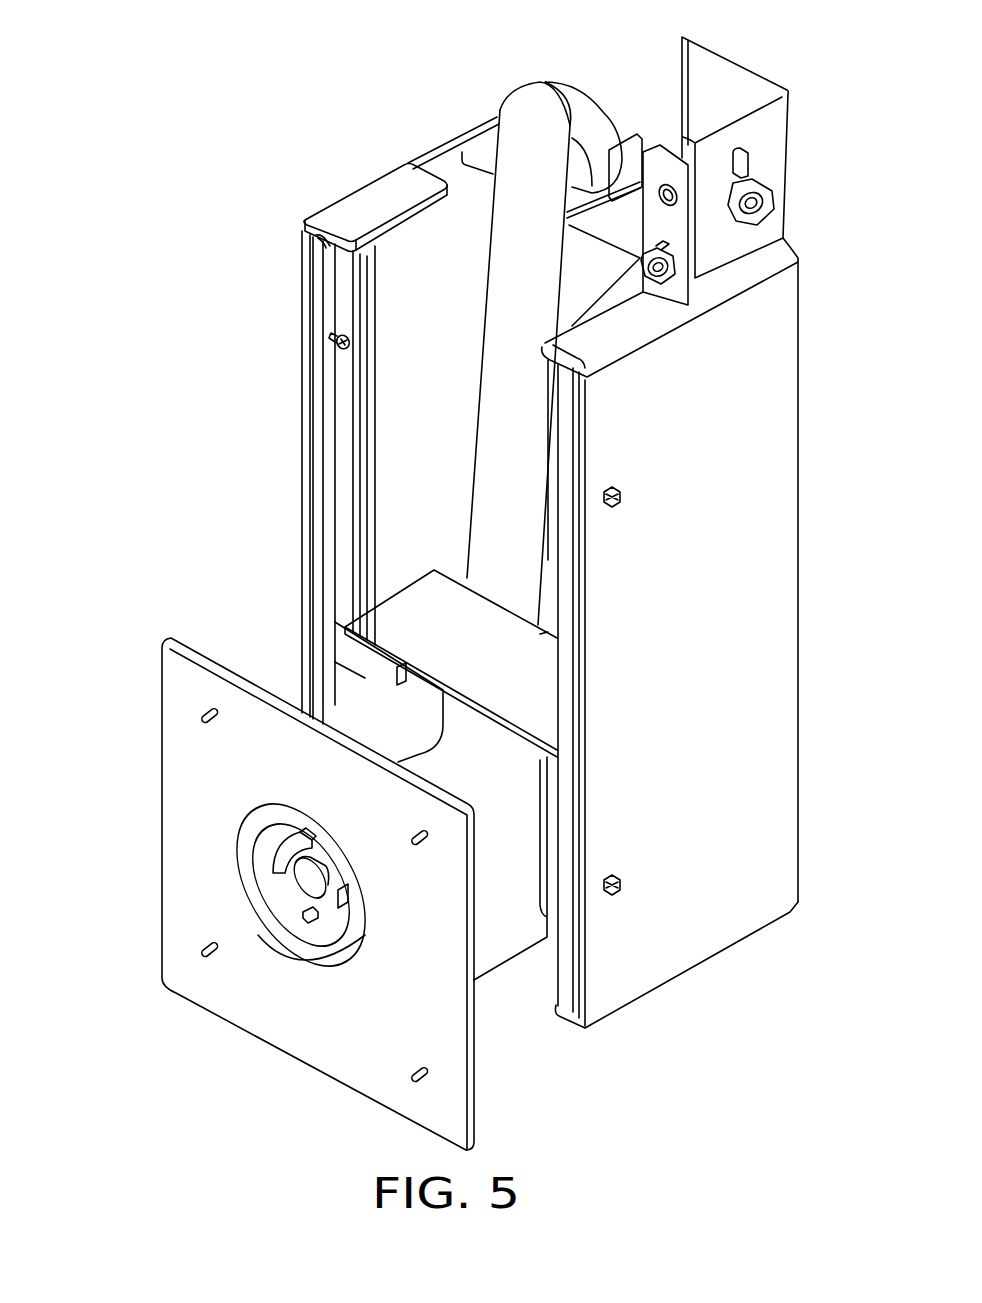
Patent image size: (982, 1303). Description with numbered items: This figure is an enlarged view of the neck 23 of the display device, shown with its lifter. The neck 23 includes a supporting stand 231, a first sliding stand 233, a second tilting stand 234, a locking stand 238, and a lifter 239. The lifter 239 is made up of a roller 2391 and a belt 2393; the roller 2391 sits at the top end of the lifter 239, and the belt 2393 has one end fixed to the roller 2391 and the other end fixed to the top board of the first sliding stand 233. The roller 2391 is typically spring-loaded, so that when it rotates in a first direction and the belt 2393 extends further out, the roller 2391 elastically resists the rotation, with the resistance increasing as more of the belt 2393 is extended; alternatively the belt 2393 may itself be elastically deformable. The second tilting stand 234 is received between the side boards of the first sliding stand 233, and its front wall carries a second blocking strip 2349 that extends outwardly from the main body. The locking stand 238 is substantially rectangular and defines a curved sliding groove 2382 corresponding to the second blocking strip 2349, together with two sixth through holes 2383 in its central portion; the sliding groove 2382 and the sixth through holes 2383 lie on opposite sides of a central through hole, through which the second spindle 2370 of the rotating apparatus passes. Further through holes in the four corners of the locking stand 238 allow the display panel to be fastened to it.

The neck 23 is at (420, 53).
The lifter 239 is at (337, 60).
The roller 2391 is at (586, 145).
The belt 2393 is at (513, 158).
The supporting stand 231 is at (787, 423).
The first sliding stand 233 is at (417, 603).
The second tilting stand 234 is at (493, 955).
The locking stand 238 is at (315, 1022).
The second blocking strip 2349 is at (290, 830).
The curved sliding groove 2382 is at (285, 840).
The second spindle 2370 is at (303, 878).
The sixth through holes 2383 is at (312, 920).